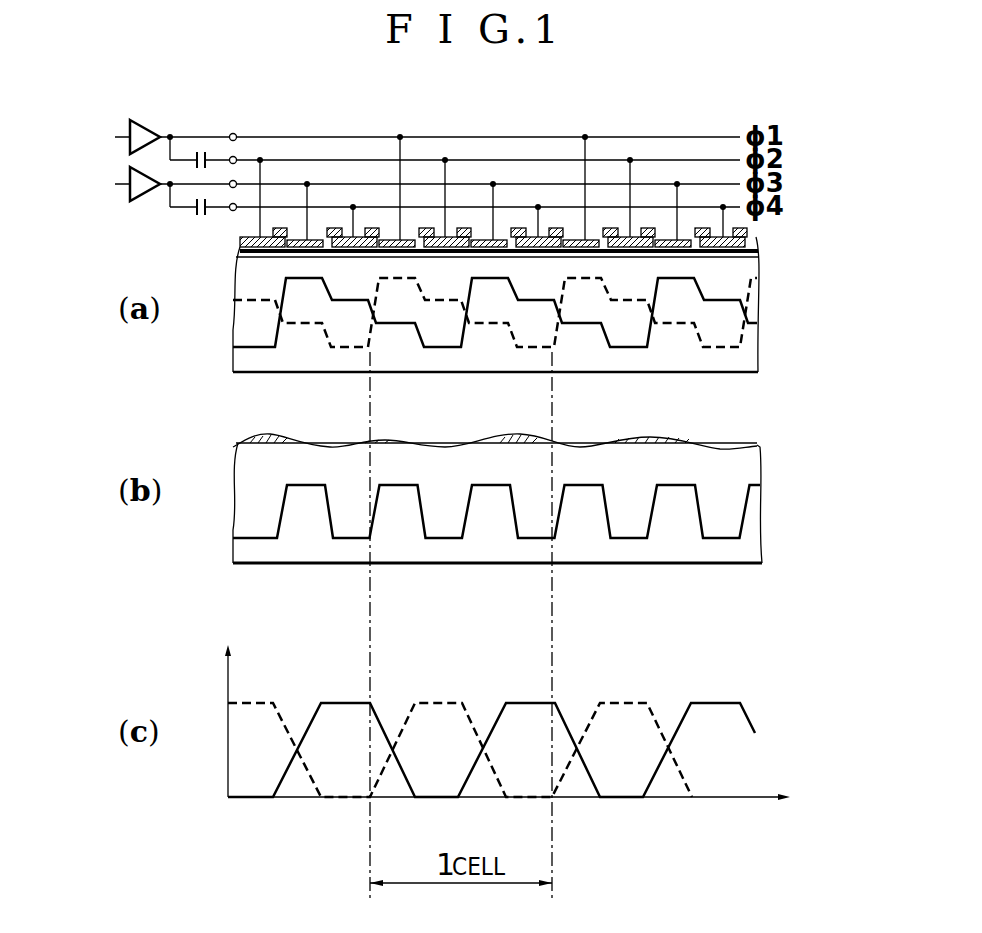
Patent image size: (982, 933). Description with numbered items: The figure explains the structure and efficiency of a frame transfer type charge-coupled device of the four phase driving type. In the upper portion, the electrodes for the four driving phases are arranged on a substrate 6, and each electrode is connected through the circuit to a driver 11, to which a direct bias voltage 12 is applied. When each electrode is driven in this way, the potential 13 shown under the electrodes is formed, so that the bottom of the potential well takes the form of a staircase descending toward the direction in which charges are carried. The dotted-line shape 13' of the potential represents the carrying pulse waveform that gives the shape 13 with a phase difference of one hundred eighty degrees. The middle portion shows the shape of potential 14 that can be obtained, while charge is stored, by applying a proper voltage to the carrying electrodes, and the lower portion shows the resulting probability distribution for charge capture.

The driver amplifiers 11 is at (132, 188).
The direct bias voltage 12 is at (198, 168).
The substrate 6 is at (752, 264).
The potential 13 is at (495, 347).
The shape of the potential 13' is at (495, 346).
The potential well profile 14 is at (652, 525).